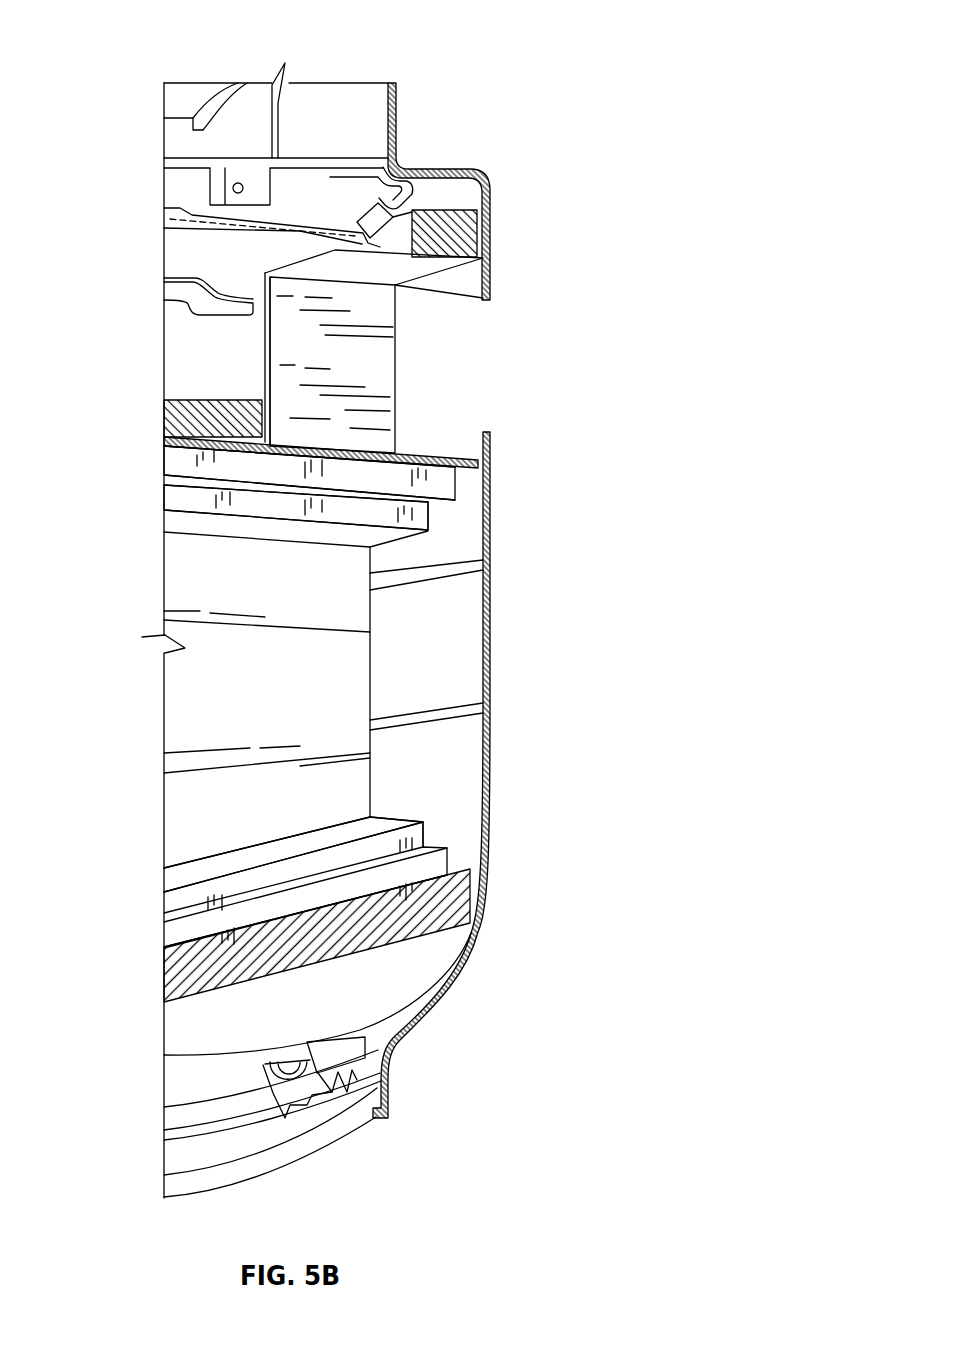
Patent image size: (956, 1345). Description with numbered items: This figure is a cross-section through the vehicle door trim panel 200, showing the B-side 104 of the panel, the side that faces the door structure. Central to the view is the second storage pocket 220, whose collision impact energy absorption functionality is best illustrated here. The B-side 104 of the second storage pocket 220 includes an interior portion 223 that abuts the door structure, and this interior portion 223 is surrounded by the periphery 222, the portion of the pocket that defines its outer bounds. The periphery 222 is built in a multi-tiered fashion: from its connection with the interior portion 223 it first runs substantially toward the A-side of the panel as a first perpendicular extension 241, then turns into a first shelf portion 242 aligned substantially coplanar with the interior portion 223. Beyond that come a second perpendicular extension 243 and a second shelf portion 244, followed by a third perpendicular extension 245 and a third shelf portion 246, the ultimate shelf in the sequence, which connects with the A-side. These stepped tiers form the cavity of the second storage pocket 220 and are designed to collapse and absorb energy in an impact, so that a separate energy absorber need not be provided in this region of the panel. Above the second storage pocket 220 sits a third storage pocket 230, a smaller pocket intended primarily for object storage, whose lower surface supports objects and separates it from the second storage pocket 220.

The vehicle door trim panel 200 is at (533, 51).
The B-side 104 is at (200, 1180).
The second storage pocket 220 is at (297, 699).
The periphery 222 is at (221, 524).
The interior portion 223 is at (333, 683).
The third storage pocket 230 is at (350, 372).
The first perpendicular extension 241 is at (370, 545).
The first shelf portion 242 is at (280, 512).
The second perpendicular extension 243 is at (433, 508).
The second shelf portion 244 is at (390, 487).
The third perpendicular extension 245 is at (457, 473).
The third shelf portion 246 is at (438, 458).